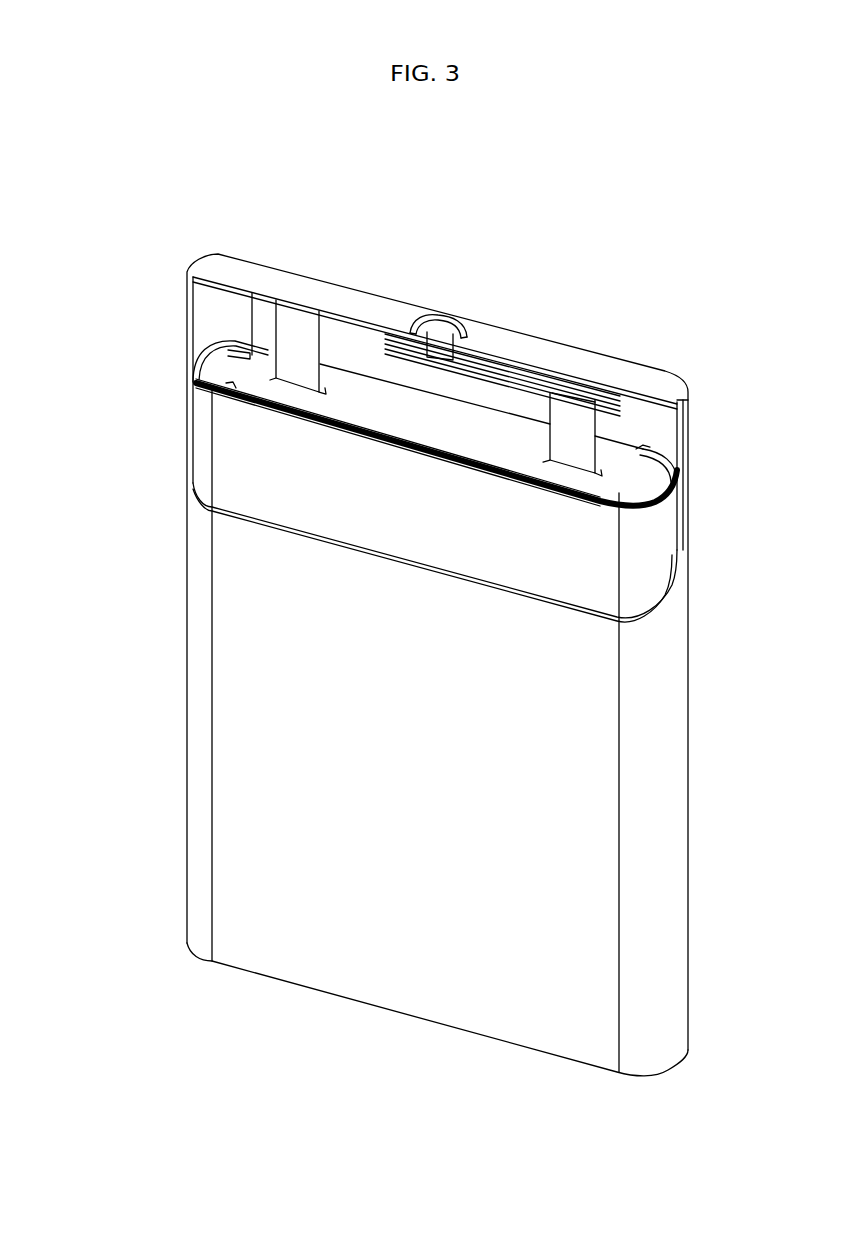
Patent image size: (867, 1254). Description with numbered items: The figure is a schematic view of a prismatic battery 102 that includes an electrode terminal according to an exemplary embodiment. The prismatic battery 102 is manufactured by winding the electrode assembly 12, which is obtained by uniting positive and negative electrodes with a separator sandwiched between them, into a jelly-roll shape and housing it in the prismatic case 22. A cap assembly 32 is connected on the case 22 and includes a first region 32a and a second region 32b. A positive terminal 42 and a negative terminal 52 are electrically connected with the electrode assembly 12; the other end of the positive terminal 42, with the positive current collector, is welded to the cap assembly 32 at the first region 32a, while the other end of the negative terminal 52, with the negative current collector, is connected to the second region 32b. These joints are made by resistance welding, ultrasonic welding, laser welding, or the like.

The prismatic battery 102 is at (391, 277).
The electrode assembly 12 is at (237, 445).
The prismatic case 22 is at (607, 697).
The cap assembly 32 is at (562, 270).
The first region 32a is at (528, 340).
The second region 32b is at (481, 347).
The positive terminal 42 is at (283, 312).
The negative terminal 52 is at (573, 410).